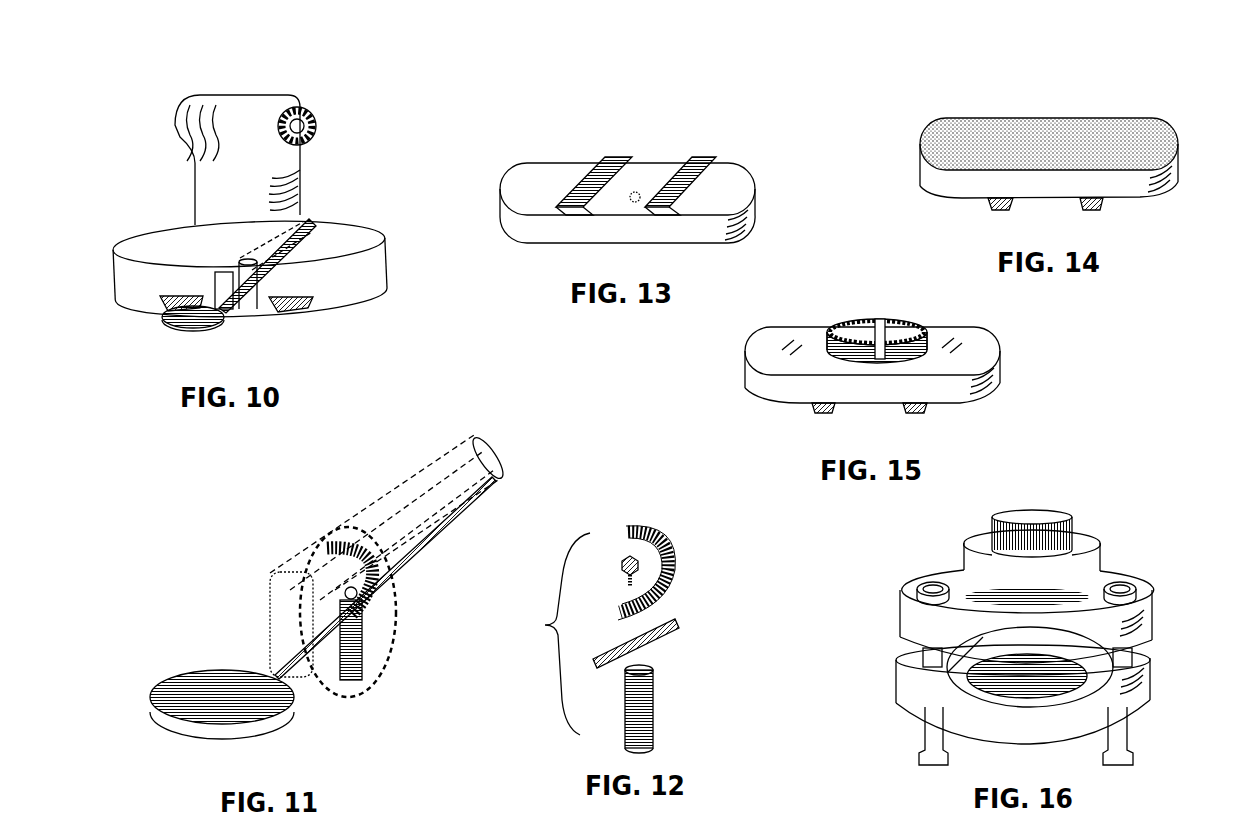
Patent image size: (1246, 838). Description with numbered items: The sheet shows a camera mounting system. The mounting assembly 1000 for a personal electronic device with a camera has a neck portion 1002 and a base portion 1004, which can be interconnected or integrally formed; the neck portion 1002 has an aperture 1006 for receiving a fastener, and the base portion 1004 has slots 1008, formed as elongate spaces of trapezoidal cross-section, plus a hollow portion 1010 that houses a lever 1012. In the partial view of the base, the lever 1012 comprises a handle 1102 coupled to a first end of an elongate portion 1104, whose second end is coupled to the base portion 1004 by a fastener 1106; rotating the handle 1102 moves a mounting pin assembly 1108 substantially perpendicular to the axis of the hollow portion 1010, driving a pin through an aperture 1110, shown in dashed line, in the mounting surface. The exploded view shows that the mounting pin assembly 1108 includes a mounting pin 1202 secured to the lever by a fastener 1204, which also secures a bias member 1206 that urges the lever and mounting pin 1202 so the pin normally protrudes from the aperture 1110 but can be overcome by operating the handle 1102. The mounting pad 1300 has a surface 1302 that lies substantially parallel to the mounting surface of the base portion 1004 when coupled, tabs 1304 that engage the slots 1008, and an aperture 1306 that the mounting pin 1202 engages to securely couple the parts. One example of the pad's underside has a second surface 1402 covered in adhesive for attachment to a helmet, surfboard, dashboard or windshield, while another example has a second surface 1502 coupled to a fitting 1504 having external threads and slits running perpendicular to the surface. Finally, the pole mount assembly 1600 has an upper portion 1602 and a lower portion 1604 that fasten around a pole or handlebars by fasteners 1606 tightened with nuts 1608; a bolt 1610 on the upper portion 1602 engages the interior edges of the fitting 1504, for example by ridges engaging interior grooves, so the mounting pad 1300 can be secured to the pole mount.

In FIG. 10, the mounting assembly 1000 is at (137, 140).
In FIG. 10, the neck portion 1002 is at (267, 107).
In FIG. 10, the base portion 1004 is at (383, 240).
In FIG. 10, the aperture 1006 is at (297, 127).
In FIG. 10, the slots 1008 is at (288, 317).
In FIG. 10, the hollow portion 1010 is at (218, 282).
In FIG. 10, the lever 1012 is at (183, 330).
In FIG. 11, the handle 1102 is at (185, 677).
In FIG. 11, the elongate portion 1104 is at (290, 677).
In FIG. 12, the elongate portion 1104 is at (665, 643).
In FIG. 11, the fastener 1106 is at (508, 445).
In FIG. 11, the mounting pin assembly 1108 is at (390, 647).
In FIG. 12, the mounting pin assembly 1108 is at (545, 625).
In FIG. 11, the aperture 1110 is at (363, 663).
In FIG. 12, the mounting pin 1202 is at (653, 717).
In FIG. 12, the fastener 1204 is at (620, 560).
In FIG. 12, the bias member 1206 is at (660, 538).
In FIG. 13, the mounting pad 1300 is at (565, 100).
In FIG. 14, the mounting pad 1300 is at (940, 97).
In FIG. 15, the mounting pad 1300 is at (738, 348).
In FIG. 13, the surface 1302 is at (542, 195).
In FIG. 13, the tabs 1304 is at (623, 153).
In FIG. 14, the tabs 1304 is at (1000, 212).
In FIG. 15, the tabs 1304 is at (822, 415).
In FIG. 13, the aperture 1306 is at (637, 190).
In FIG. 14, the second surface 1402 is at (1072, 140).
In FIG. 15, the second surface 1502 is at (818, 332).
In FIG. 15, the fitting 1504 is at (880, 310).
In FIG. 16, the pole mount assembly 1600 is at (1130, 482).
In FIG. 16, the upper portion 1602 is at (897, 603).
In FIG. 16, the lower portion 1604 is at (890, 678).
In FIG. 16, the fasteners 1606 is at (1130, 740).
In FIG. 16, the nuts 1608 is at (1120, 580).
In FIG. 16, the bolt 1610 is at (1057, 510).